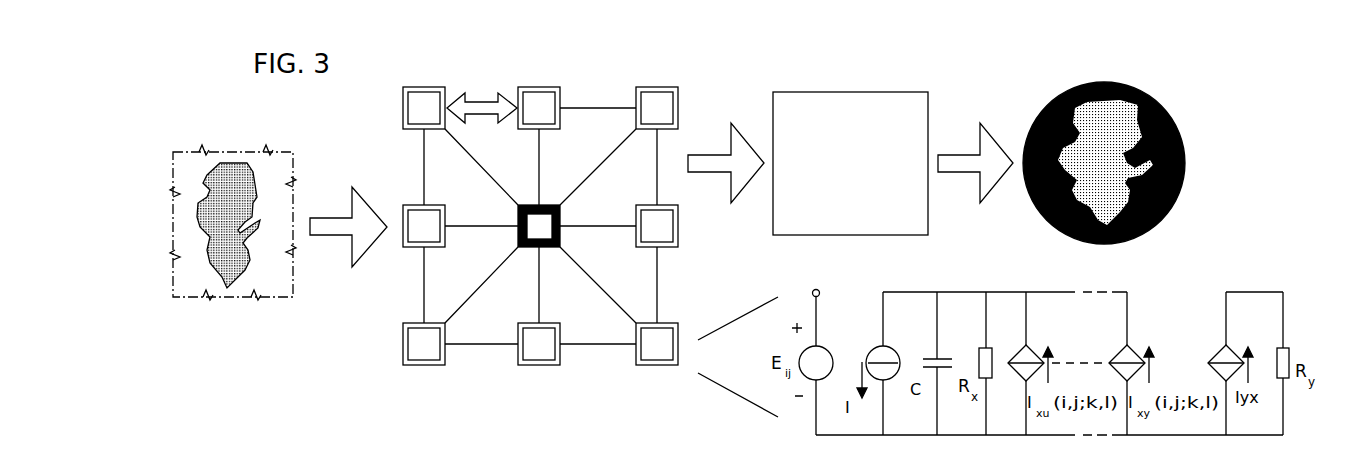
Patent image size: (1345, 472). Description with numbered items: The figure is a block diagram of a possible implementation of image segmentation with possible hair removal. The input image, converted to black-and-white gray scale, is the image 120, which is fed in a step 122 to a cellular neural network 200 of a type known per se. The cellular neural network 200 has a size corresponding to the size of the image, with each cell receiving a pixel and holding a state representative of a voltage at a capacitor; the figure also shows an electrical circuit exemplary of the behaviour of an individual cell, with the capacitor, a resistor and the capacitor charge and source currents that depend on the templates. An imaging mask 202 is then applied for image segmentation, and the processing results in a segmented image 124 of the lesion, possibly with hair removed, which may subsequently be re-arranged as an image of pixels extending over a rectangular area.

The gray scale image 120 is at (228, 304).
The feeding step 122 is at (616, 90).
The segmented image 124 is at (1113, 72).
The cellular neural network 200 is at (536, 80).
The imaging mask 202 is at (862, 80).